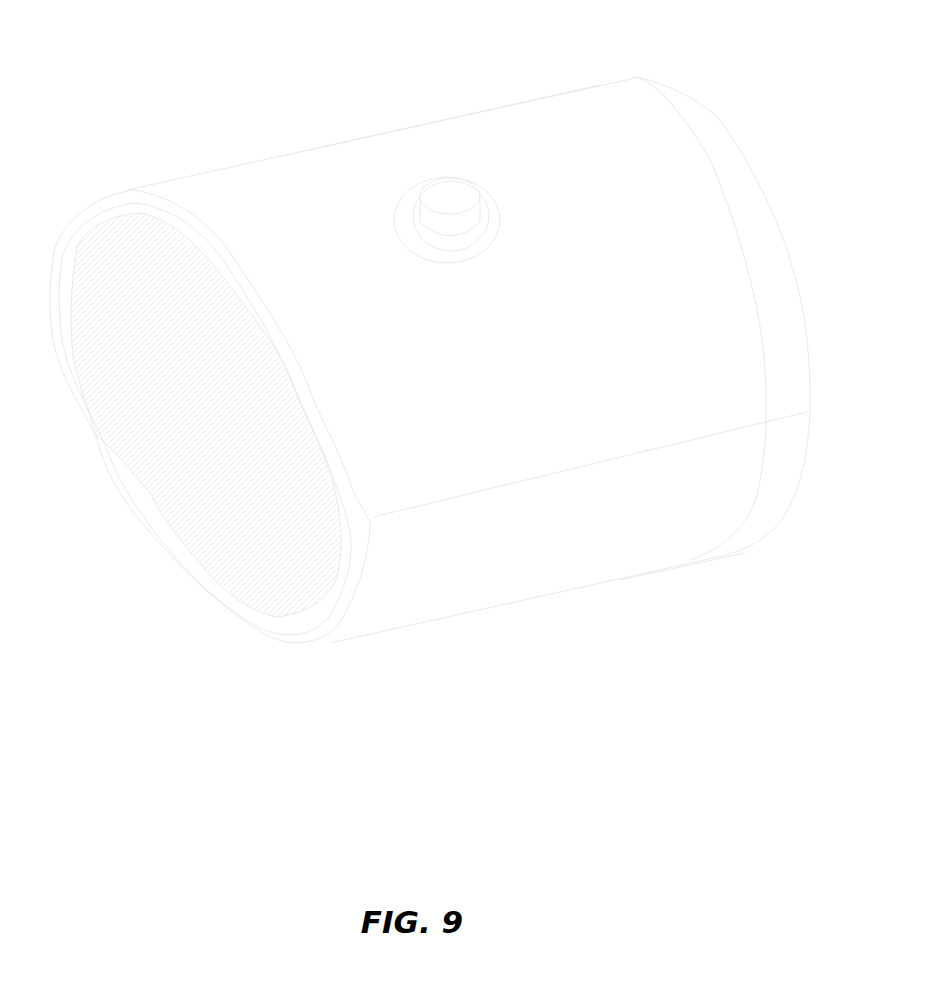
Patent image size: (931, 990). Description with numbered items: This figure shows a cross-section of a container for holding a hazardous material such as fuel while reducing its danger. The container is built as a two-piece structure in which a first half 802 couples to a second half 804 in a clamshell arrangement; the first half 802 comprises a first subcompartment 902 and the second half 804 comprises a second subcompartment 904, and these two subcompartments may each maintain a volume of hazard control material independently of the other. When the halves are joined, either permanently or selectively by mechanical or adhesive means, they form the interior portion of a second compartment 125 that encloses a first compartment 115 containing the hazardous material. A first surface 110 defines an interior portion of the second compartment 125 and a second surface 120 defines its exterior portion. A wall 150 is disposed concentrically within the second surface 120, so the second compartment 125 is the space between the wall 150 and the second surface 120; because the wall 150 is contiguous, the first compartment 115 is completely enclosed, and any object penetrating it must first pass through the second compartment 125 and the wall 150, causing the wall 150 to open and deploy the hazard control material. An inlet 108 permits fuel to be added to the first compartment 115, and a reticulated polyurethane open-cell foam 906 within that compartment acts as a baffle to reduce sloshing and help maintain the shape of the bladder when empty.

The first half 802 is at (647, 110).
The second half 804 is at (693, 547).
The second surface 120 is at (420, 147).
The inlet 108 is at (473, 203).
The first surface 110 is at (150, 238).
The first compartment 115 is at (148, 425).
The second compartment 125 is at (138, 517).
The wall 150 is at (355, 576).
The first subcompartment 902 is at (207, 230).
The second subcompartment 904 is at (288, 632).
The reticulated polyurethane open-cell foam 906 is at (250, 490).